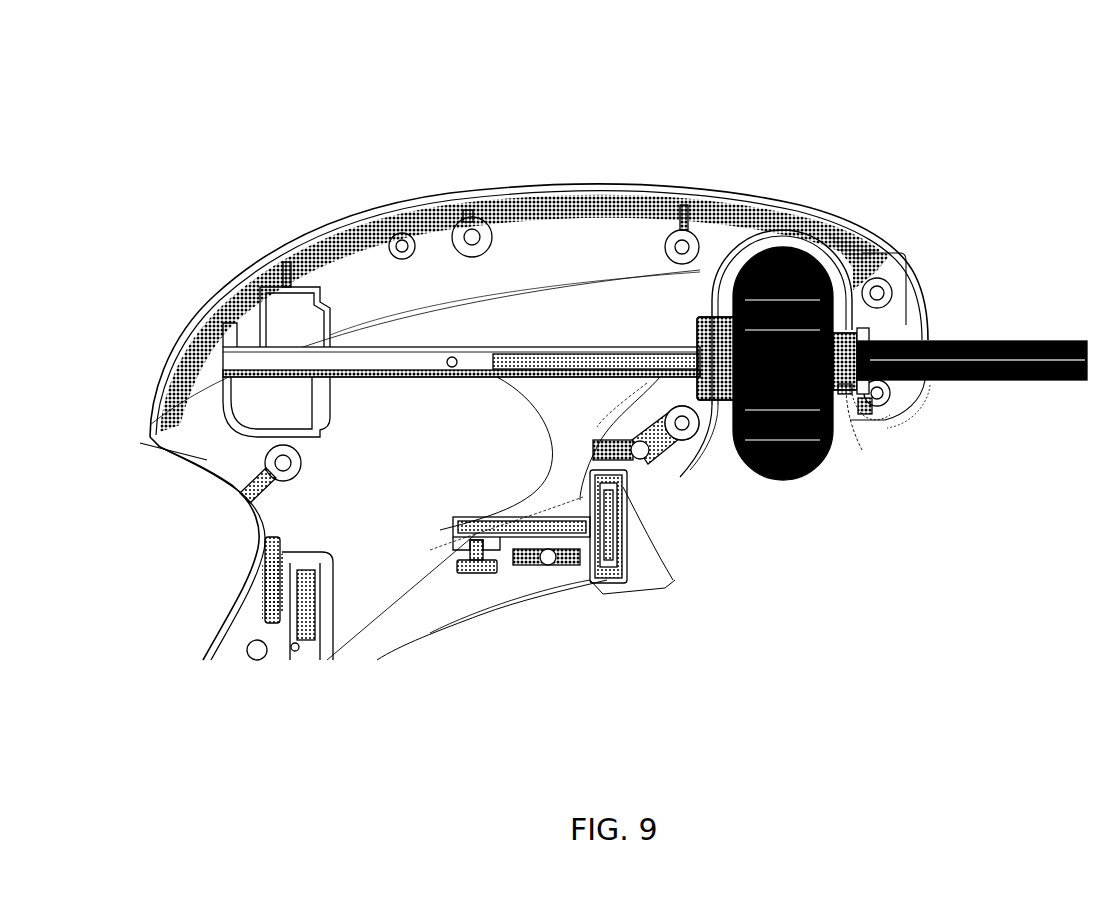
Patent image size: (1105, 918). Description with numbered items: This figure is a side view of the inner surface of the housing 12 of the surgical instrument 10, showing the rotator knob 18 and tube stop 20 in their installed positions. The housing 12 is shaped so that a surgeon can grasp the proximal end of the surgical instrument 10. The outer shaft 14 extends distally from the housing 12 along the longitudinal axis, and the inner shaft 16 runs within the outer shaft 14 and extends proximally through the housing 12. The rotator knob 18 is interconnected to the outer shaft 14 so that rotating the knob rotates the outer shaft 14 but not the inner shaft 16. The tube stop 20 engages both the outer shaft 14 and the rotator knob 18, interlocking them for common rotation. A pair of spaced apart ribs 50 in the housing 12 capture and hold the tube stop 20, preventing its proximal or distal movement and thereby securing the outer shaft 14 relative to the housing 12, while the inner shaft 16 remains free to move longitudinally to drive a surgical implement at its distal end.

The surgical instrument 10 is at (613, 345).
The housing 12 is at (603, 181).
The outer shaft 14 is at (1043, 343).
The inner shaft 16 is at (538, 347).
The rotator knob 18 is at (790, 243).
The tube stop 20 is at (862, 327).
The ribs 50 is at (867, 413).